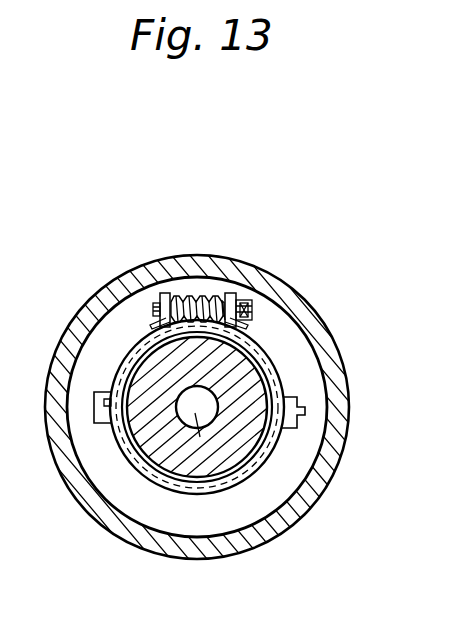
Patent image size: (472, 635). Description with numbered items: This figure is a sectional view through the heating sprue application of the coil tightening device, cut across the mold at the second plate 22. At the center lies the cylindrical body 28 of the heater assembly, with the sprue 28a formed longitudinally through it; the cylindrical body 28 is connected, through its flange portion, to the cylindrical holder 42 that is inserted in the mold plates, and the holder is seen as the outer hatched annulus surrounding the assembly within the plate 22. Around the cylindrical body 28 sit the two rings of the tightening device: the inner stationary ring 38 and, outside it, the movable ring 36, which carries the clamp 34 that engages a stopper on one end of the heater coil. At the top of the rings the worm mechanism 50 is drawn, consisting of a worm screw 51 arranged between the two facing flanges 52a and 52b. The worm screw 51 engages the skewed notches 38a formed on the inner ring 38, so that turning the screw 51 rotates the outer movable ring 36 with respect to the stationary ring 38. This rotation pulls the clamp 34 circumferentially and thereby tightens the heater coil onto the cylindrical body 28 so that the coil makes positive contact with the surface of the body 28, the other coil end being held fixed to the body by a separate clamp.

The second plate 22 is at (340, 348).
The cylindrical holder 42 is at (343, 384).
The stationary ring 38 is at (248, 468).
The skewed notches 38a is at (244, 328).
The movable ring 36 is at (283, 445).
The clamp 34 is at (306, 412).
The cylindrical body 28 is at (183, 456).
The sprue 28a is at (270, 487).
The worm mechanism 50 is at (203, 297).
The worm screw 51 is at (187, 298).
The flange 52a is at (163, 298).
The flange 52b is at (232, 300).